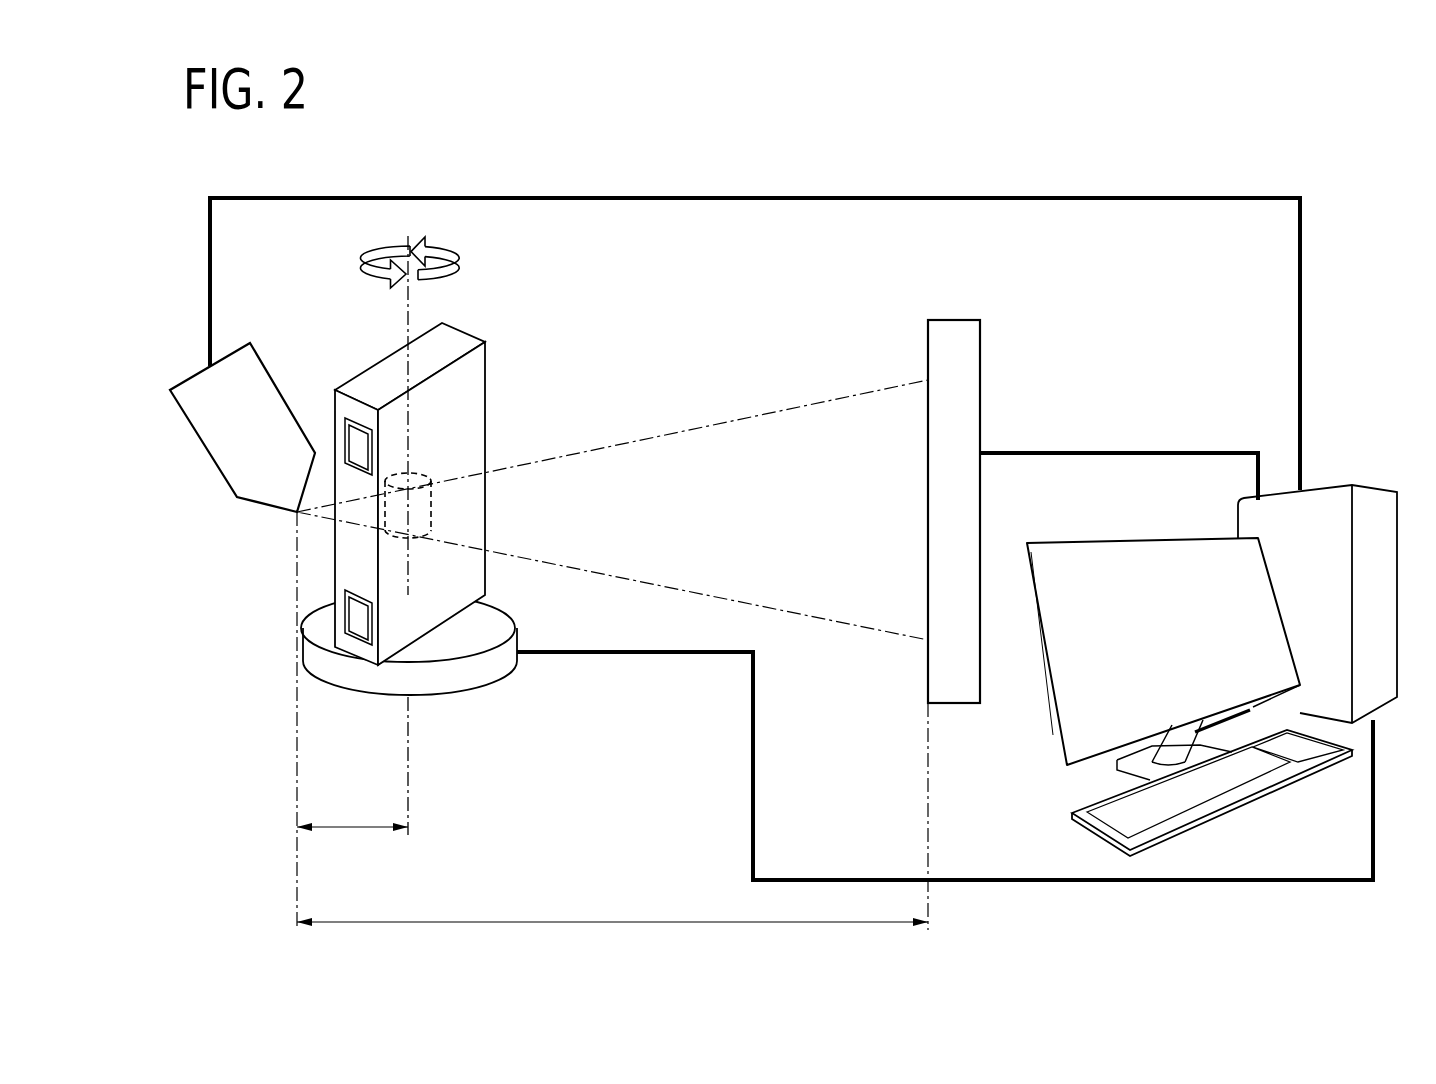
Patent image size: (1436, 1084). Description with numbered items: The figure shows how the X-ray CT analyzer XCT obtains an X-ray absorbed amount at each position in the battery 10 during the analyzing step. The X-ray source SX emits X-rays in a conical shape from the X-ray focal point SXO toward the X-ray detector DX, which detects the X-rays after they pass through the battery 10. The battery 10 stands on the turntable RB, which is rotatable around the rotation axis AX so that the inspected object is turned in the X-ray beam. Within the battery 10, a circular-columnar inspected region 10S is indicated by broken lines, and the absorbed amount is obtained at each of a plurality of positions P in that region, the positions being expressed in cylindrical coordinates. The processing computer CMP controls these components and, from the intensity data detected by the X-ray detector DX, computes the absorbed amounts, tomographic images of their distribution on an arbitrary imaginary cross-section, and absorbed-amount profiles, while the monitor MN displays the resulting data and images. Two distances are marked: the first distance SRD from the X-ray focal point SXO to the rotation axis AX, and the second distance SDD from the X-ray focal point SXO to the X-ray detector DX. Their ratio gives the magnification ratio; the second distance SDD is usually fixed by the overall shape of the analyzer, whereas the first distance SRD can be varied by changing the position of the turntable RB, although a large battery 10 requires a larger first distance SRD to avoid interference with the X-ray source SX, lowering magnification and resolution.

The X-ray CT analyzer XCT is at (715, 182).
The rotation axis AX is at (412, 305).
The X-ray source SX is at (258, 380).
The X-ray focal point SXO is at (300, 513).
The battery 10 is at (470, 385).
The inspected region 10S is at (433, 510).
The position P is at (437, 520).
The turntable RB is at (465, 673).
The first distance SRD is at (352, 721).
The second distance SDD is at (612, 816).
The X-ray detector DX is at (968, 378).
The monitor MN is at (1123, 548).
The processing computer CMP is at (1373, 500).